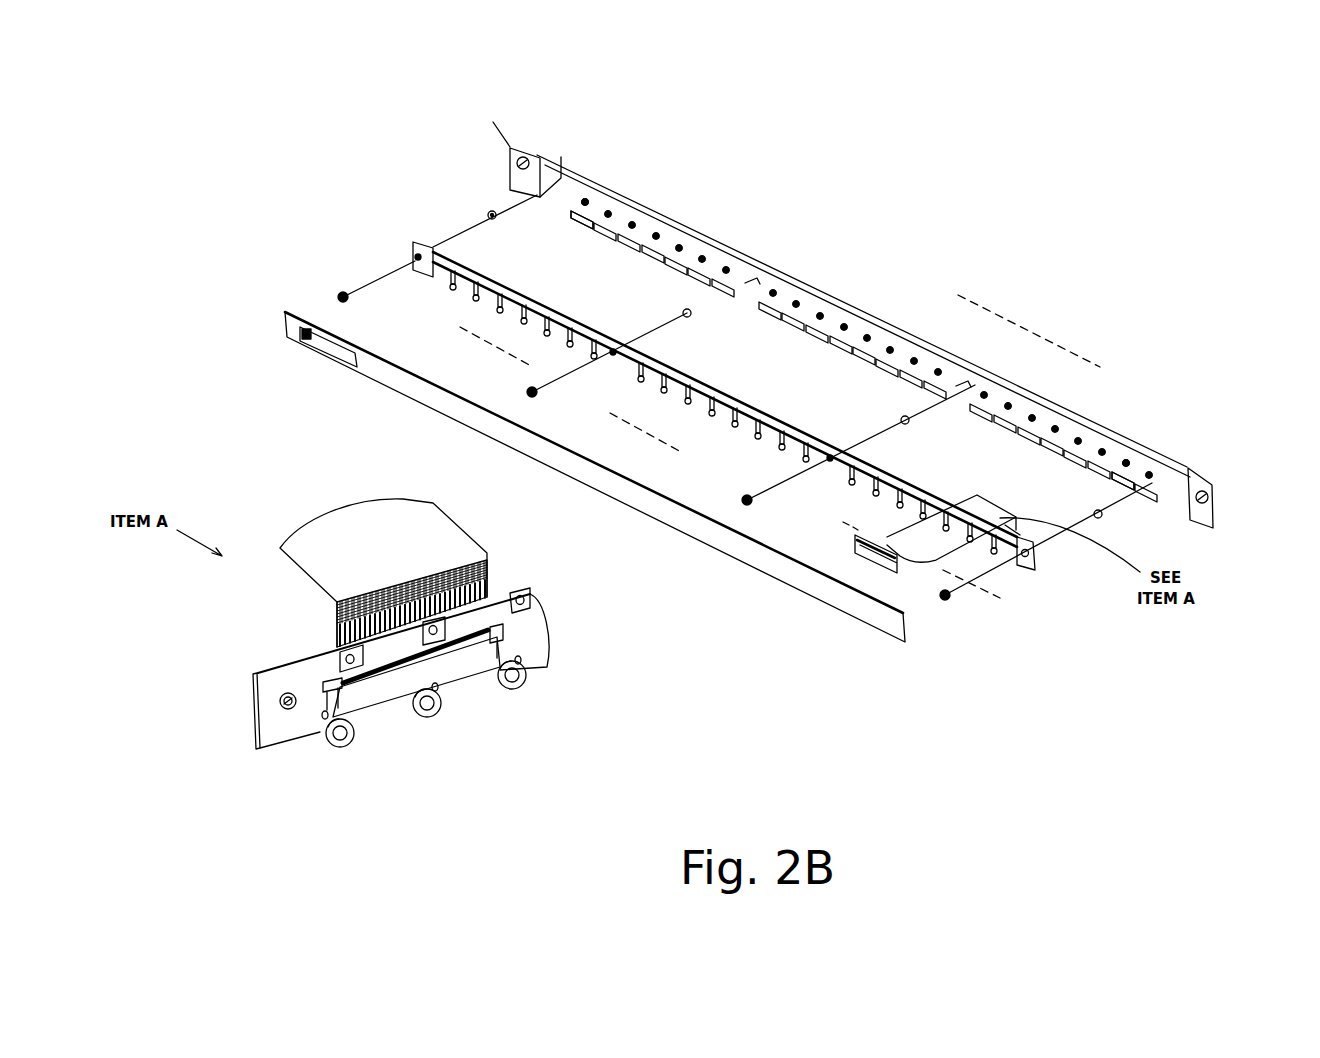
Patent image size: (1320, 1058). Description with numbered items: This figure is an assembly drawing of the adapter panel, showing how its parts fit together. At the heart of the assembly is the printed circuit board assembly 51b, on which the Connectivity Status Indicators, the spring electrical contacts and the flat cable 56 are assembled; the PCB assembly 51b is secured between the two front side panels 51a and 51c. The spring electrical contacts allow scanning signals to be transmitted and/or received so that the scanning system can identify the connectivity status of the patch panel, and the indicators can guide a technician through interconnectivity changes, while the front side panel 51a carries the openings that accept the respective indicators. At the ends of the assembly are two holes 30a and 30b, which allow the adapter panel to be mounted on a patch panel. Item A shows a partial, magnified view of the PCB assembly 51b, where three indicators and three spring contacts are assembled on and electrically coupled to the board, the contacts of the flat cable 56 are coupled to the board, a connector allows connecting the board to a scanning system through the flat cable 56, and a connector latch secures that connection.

The hole 30a is at (1213, 493).
The hole 30b is at (508, 146).
The front side panel 51a is at (880, 322).
The printed circuit board assembly 51b is at (748, 404).
The front side panel 51c is at (670, 517).
The flat cable 56 is at (960, 518).